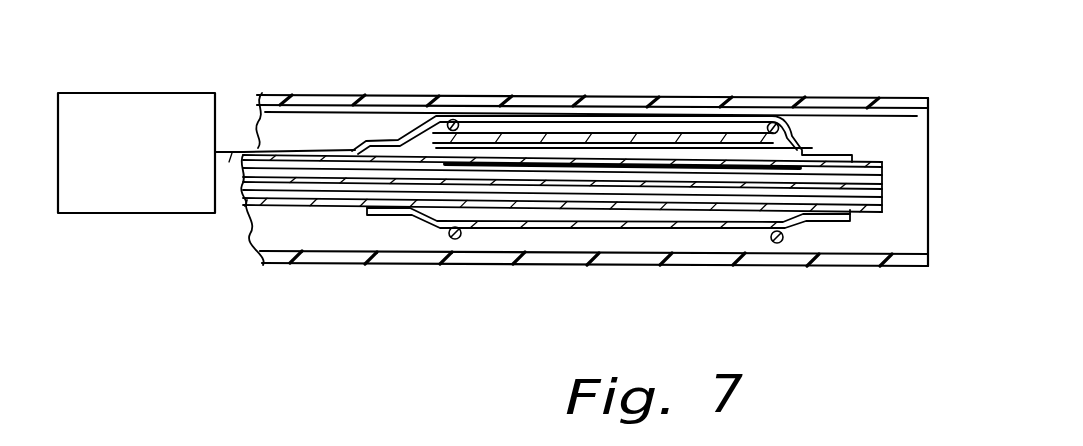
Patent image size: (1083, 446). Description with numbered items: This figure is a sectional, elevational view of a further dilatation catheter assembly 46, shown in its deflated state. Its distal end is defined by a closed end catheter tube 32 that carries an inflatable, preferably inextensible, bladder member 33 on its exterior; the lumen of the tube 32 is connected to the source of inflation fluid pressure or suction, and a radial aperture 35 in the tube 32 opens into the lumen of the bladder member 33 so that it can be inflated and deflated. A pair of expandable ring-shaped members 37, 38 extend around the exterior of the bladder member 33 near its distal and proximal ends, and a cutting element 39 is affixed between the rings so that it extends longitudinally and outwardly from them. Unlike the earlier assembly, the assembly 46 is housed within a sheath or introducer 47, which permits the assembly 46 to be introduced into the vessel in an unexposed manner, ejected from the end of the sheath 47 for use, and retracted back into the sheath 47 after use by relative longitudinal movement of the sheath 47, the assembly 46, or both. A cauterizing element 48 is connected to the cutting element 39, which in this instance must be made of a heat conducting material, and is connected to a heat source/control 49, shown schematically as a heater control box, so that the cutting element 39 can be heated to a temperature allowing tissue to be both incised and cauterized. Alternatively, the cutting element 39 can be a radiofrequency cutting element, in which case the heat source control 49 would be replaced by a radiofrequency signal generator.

The catheter tube 32 is at (802, 158).
The bladder member 33 is at (533, 133).
The radial aperture 35 is at (617, 158).
The expandable ring-shaped member 37 is at (806, 99).
The expandable ring-shaped member 38 is at (450, 119).
The cutting element 39 is at (592, 92).
The dilatation catheter assembly 46 is at (620, 96).
The sheath 47 is at (722, 97).
The cauterizing element 48 is at (285, 147).
The heat source/control 49 is at (165, 92).